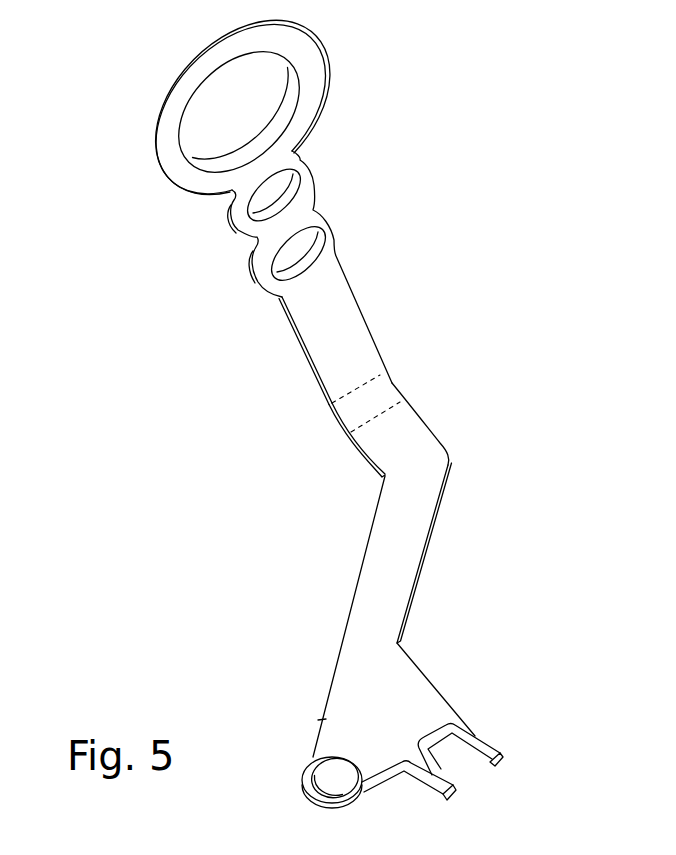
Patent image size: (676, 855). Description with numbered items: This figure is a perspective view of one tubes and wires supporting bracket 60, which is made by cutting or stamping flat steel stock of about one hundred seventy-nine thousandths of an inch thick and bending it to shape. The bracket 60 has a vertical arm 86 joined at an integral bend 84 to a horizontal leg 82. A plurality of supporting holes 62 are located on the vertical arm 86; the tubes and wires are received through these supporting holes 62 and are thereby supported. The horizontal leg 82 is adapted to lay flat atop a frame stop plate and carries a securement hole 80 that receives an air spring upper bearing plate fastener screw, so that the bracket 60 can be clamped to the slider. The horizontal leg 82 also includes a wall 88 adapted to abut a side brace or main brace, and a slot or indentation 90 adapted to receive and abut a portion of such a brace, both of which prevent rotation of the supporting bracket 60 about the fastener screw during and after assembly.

The tubes and wires supporting bracket 60 is at (440, 437).
The supporting holes 62 is at (318, 236).
The securement hole 80 is at (327, 773).
The horizontal leg 82 is at (370, 580).
The integral bend 84 is at (375, 390).
The vertical arm 86 is at (313, 307).
The wall 88 is at (467, 737).
The slot or indentation 90 is at (482, 774).